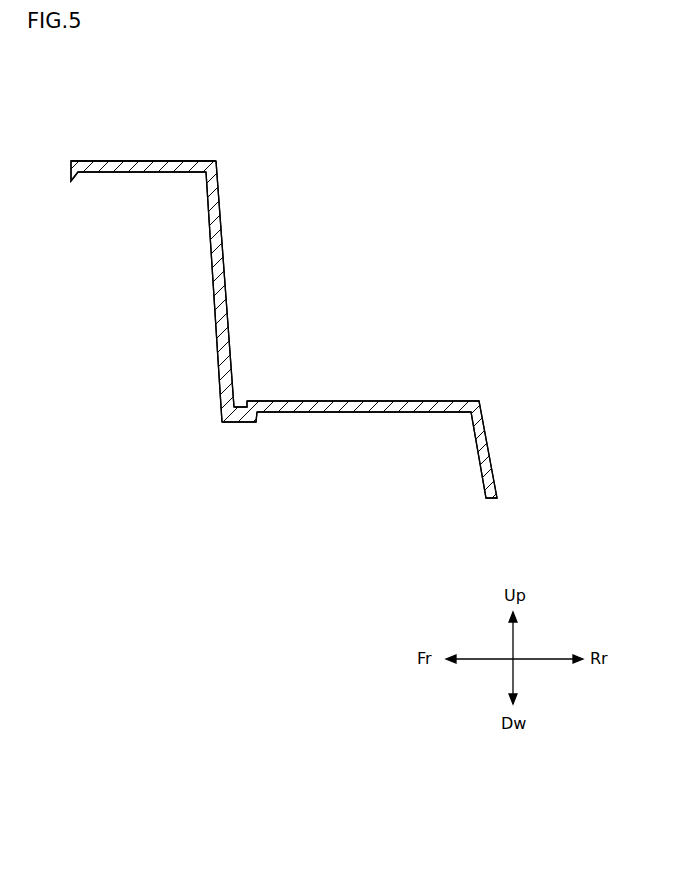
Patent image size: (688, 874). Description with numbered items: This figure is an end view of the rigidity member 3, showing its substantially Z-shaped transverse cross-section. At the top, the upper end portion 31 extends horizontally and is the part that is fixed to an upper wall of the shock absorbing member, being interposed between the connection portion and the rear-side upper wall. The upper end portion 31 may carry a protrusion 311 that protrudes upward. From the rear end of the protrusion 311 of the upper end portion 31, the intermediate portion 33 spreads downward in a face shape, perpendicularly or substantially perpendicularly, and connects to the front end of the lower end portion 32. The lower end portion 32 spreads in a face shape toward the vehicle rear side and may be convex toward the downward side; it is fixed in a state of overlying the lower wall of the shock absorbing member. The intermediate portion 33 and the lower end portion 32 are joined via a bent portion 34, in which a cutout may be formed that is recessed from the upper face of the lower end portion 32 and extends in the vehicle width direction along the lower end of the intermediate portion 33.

The rigidity member 3 is at (365, 176).
The upper end portion 31 is at (92, 174).
The protrusion 311 is at (181, 161).
The lower end portion 32 is at (378, 400).
The intermediate portion 33 is at (222, 245).
The bent portion 34 is at (240, 399).